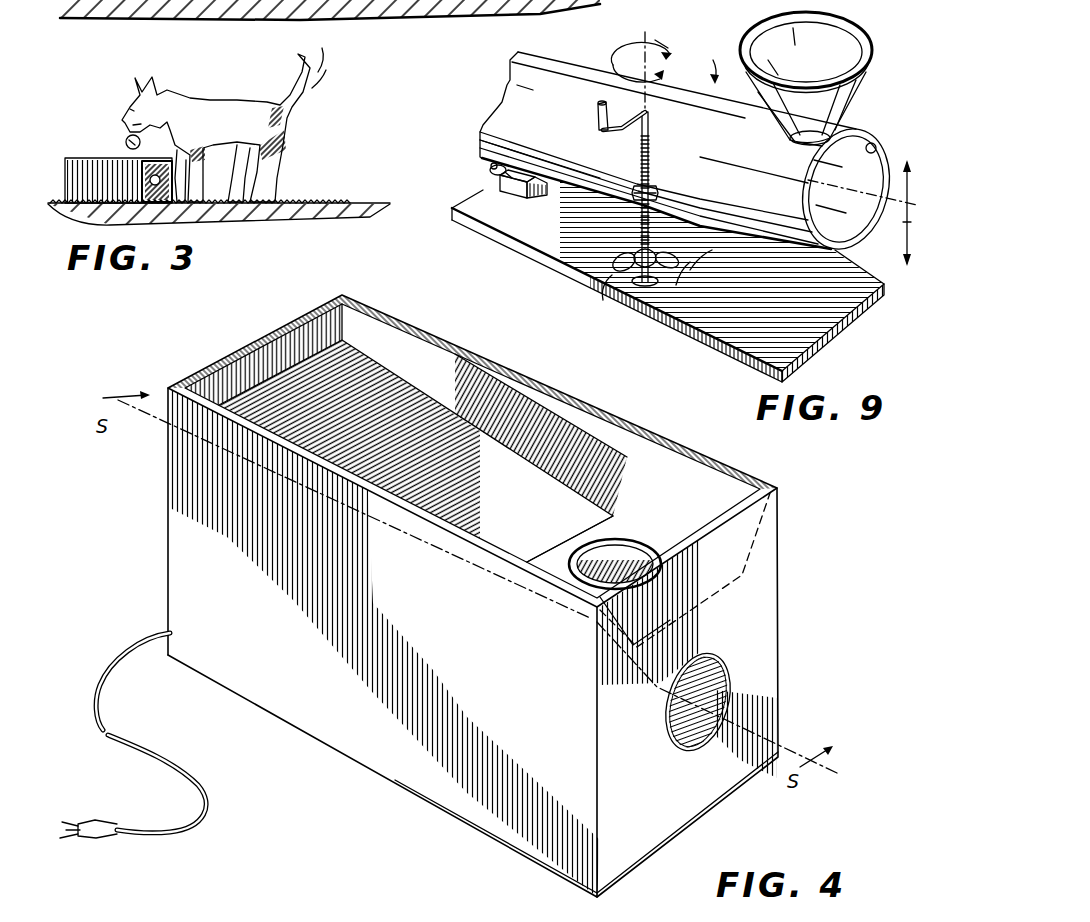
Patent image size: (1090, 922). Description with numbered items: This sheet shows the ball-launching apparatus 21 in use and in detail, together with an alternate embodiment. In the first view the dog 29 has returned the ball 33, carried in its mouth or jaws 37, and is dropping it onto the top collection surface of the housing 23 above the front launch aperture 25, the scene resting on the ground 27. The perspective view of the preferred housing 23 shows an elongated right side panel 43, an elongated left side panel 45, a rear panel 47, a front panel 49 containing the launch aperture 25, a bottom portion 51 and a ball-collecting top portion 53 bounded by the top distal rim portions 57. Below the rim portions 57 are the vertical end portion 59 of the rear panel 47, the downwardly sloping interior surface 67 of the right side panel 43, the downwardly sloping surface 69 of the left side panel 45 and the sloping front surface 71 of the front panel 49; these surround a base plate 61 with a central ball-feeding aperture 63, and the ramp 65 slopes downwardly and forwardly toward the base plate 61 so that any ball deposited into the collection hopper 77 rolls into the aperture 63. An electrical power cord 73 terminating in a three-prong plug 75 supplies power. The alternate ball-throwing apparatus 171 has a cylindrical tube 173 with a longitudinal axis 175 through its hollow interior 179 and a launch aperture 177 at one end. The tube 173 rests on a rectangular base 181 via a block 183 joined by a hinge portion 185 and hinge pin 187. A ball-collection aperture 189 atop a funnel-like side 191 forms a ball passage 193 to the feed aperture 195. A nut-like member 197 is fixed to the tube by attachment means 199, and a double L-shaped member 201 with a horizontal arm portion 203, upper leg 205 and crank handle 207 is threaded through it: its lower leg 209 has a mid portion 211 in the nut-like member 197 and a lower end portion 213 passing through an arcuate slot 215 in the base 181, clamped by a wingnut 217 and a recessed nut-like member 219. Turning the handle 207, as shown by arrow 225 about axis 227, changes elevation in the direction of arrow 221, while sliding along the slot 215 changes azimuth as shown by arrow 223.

In FIG. 3, the ball-launching apparatus 21 is at (79, 124).
In FIG. 4, the ball-launching apparatus 21 is at (510, 358).
In FIG. 3, the housing 23 is at (74, 170).
In FIG. 4, the housing 23 is at (191, 509).
In FIG. 3, the front launch aperture 25 is at (154, 205).
In FIG. 4, the front launch aperture 25 is at (722, 666).
In FIG. 3, the ground 27 is at (327, 202).
In FIG. 3, the dog 29 is at (239, 107).
In FIG. 3, the ball 33 is at (126, 144).
In FIG. 3, the mouth or jaws 37 is at (157, 169).
In FIG. 4, the right side panel 43 is at (655, 432).
In FIG. 4, the left side panel 45 is at (384, 643).
In FIG. 4, the rear panel 47 is at (218, 357).
In FIG. 4, the front panel 49 is at (688, 673).
In FIG. 4, the bottom portion 51 is at (394, 790).
In FIG. 4, the ball-collecting top portion 53 is at (806, 522).
In FIG. 4, the top distal rim portions 57 is at (240, 350).
In FIG. 4, the vertical end portion of the rear panel 59 is at (305, 328).
In FIG. 4, the base plate 61 is at (625, 532).
In FIG. 4, the ball-feeding aperture 63 is at (632, 563).
In FIG. 4, the ramp 65 is at (349, 439).
In FIG. 4, the downwardly sloping interior surface of the right side panel 67 is at (541, 435).
In FIG. 4, the downwardly sloping surface of the left side panel 69 is at (512, 558).
In FIG. 4, the front surface of the front panel 71 is at (648, 588).
In FIG. 4, the electrical power cord 73 is at (124, 650).
In FIG. 4, the plug 75 is at (108, 815).
In FIG. 4, the collection hopper 77 is at (542, 444).
In FIG. 9, the ball-throwing apparatus 171 is at (887, 69).
In FIG. 9, the tube 173 is at (708, 61).
In FIG. 9, the longitudinal axis 175 is at (924, 233).
In FIG. 9, the launch aperture 177 is at (887, 143).
In FIG. 9, the hollow interior 179 is at (853, 189).
In FIG. 9, the base 181 is at (840, 310).
In FIG. 9, the block 183 is at (521, 190).
In FIG. 9, the hinge portion 185 is at (507, 188).
In FIG. 9, the hinge pin 187 is at (490, 170).
In FIG. 9, the ball-collection aperture 189 is at (836, 54).
In FIG. 9, the funnel-like side 191 is at (860, 108).
In FIG. 9, the ball passage 193 is at (806, 52).
In FIG. 9, the feed aperture 195 is at (807, 146).
In FIG. 9, the nut-like member 197 is at (660, 195).
In FIG. 9, the attachment means 199 is at (652, 183).
In FIG. 9, the double L-shaped member 201 is at (635, 145).
In FIG. 9, the horizontal arm portion 203 is at (632, 116).
In FIG. 9, the upper leg 205 is at (597, 102).
In FIG. 9, the crank handle 207 is at (597, 123).
In FIG. 9, the lower leg 209 is at (634, 174).
In FIG. 9, the mid portion 211 is at (650, 122).
In FIG. 9, the lower end portion 213 is at (626, 254).
In FIG. 9, the arcuate slot 215 is at (703, 245).
In FIG. 9, the wingnut 217 is at (645, 288).
In FIG. 9, the recessed nut-like member 219 is at (606, 305).
In FIG. 9, the bi-directional arrow 221 is at (923, 213).
In FIG. 9, the bi-directional arrow 223 is at (667, 287).
In FIG. 9, the bi-directional arrow 225 is at (628, 62).
In FIG. 9, the longitudinal axis of the lower leg 227 is at (662, 48).